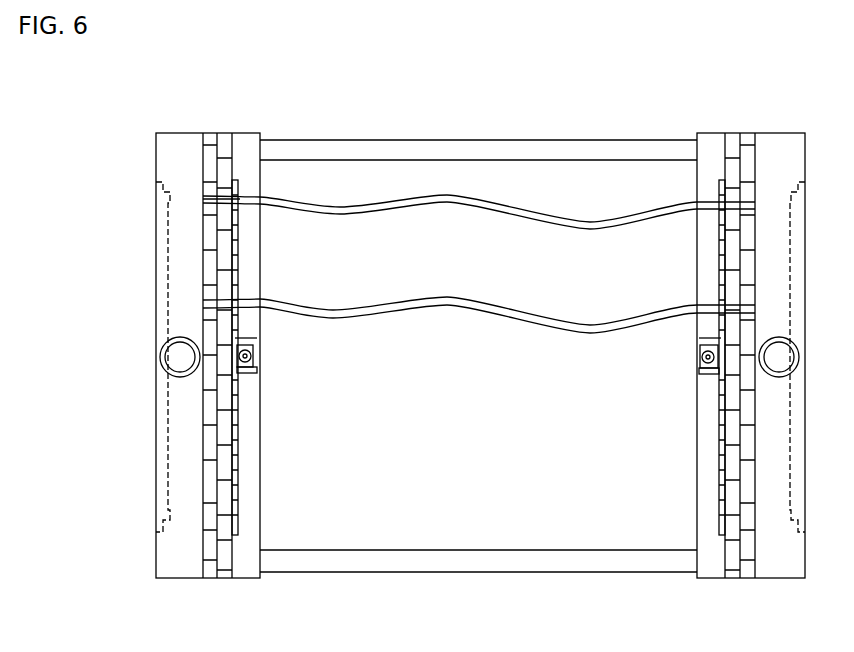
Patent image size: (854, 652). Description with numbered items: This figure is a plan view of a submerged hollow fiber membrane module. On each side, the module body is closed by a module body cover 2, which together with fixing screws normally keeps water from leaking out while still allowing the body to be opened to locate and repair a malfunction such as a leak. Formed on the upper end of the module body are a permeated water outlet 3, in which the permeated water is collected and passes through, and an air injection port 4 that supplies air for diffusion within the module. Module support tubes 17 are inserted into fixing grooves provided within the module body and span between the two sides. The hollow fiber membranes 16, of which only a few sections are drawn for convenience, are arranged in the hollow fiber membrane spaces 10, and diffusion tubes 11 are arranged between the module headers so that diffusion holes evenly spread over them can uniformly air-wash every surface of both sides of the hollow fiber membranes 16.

The module body cover 2 is at (158, 250).
The permeated water outlet 3 is at (176, 358).
The air injection port 4 is at (238, 357).
The hollow fiber membrane space 10 is at (218, 193).
The diffusion tube 11 is at (235, 220).
The hollow fiber membrane 16 is at (355, 207).
The module support tube 17 is at (315, 140).